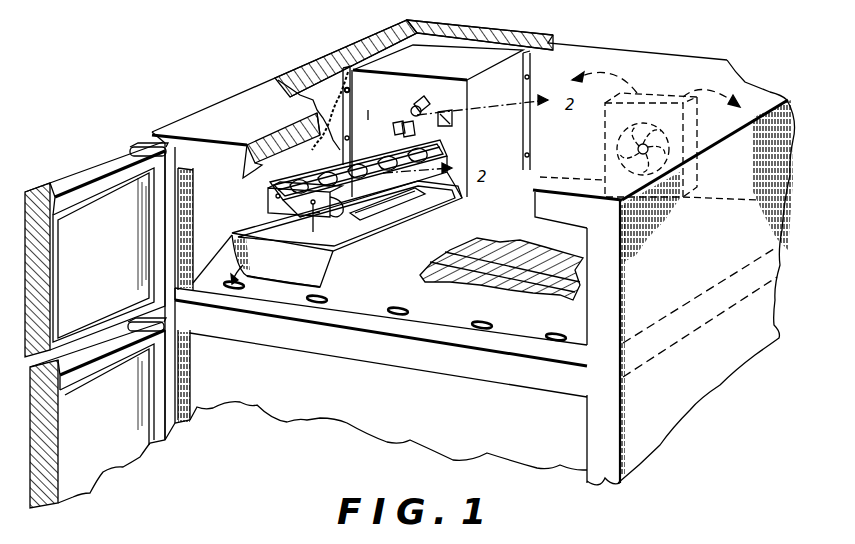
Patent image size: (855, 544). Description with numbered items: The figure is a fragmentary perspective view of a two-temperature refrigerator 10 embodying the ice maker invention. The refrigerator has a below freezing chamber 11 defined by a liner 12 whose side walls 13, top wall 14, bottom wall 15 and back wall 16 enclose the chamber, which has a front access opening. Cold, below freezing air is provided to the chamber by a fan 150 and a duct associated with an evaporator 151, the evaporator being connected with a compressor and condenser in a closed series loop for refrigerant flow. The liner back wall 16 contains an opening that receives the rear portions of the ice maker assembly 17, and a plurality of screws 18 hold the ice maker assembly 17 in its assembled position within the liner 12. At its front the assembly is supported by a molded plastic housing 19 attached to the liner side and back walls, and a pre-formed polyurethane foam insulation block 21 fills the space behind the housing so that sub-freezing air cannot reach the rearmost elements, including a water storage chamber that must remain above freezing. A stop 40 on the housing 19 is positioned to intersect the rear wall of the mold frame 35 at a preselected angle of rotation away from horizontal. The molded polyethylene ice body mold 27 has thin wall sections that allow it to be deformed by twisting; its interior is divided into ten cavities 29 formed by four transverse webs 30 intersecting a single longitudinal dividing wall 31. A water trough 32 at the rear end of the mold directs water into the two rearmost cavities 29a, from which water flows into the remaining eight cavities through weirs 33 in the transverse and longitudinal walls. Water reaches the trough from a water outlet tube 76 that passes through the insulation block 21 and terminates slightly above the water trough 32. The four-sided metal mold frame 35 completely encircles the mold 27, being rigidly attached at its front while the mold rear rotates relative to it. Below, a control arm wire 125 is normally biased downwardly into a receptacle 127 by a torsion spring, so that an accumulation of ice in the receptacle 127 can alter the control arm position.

The two-temperature refrigerator 10 is at (626, 43).
The below freezing chamber 11 is at (208, 180).
The liner 12 is at (268, 304).
The side walls 13 is at (218, 221).
The top wall 14 is at (333, 99).
The bottom wall 15 is at (401, 308).
The back wall 16 is at (550, 128).
The ice maker assembly 17 is at (368, 124).
The screws 18 is at (350, 90).
The molded plastic housing 19 is at (470, 58).
The pre-formed polyurethane foam insulation block 21 is at (289, 168).
The ice body mold 27 is at (460, 197).
The cavities 29 is at (270, 182).
The rearmost cavities 29a is at (400, 128).
The transverse webs 30 is at (323, 167).
The longitudinal dividing wall 31 is at (318, 160).
The water trough 32 is at (410, 122).
The weirs 33 is at (337, 212).
The mold frame 35 is at (267, 204).
The stop 40 is at (453, 118).
The water outlet tube 76 is at (426, 108).
The control arm wire 125 is at (452, 217).
The receptacle 127 is at (413, 230).
The fan 150 is at (646, 128).
The evaporator 151 is at (533, 283).